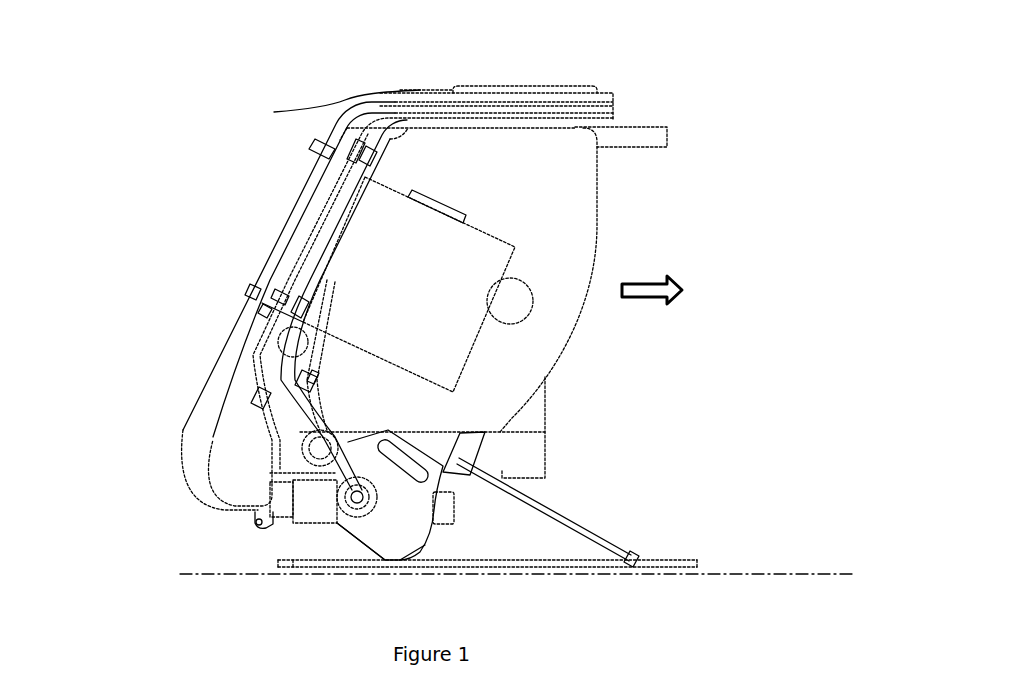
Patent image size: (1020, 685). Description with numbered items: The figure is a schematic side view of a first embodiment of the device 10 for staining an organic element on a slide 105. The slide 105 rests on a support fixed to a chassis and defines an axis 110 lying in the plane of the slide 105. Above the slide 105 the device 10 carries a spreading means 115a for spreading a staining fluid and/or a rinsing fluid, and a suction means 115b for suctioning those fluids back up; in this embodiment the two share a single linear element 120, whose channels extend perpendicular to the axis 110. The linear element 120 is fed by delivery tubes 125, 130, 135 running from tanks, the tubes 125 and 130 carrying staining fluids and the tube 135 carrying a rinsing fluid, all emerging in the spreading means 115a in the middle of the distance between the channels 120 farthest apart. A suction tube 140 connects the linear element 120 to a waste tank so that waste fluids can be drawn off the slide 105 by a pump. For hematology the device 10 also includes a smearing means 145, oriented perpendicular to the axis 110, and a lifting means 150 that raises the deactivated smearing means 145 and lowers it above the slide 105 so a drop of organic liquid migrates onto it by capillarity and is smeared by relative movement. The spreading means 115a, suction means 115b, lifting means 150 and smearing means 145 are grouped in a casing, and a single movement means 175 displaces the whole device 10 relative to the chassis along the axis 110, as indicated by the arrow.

The device 10 is at (296, 72).
The slide 105 is at (713, 565).
The axis 110 is at (810, 573).
The spreading means 115a is at (397, 556).
The suction means 115b is at (397, 556).
The linear element 120 is at (382, 530).
The tube 125 is at (155, 522).
The tube 130 is at (297, 210).
The tube 135 is at (430, 479).
The suction tube 140 is at (593, 110).
The smearing means 145 is at (523, 498).
The lifting means 150 is at (493, 253).
The movement means 175 is at (520, 84).